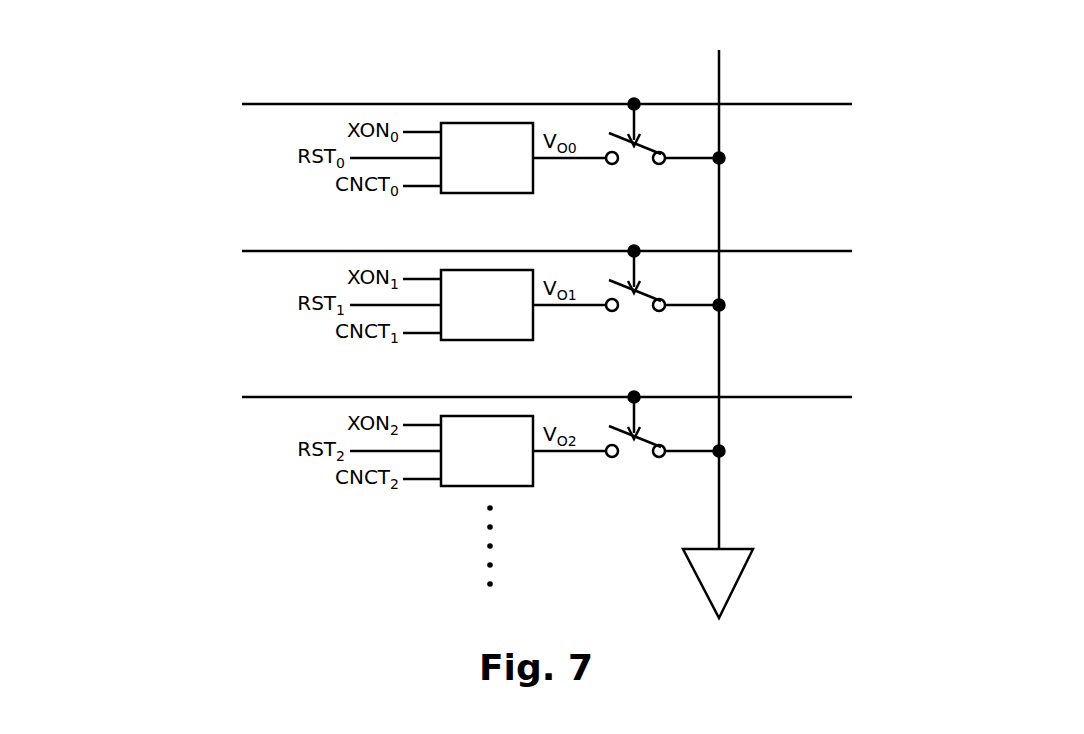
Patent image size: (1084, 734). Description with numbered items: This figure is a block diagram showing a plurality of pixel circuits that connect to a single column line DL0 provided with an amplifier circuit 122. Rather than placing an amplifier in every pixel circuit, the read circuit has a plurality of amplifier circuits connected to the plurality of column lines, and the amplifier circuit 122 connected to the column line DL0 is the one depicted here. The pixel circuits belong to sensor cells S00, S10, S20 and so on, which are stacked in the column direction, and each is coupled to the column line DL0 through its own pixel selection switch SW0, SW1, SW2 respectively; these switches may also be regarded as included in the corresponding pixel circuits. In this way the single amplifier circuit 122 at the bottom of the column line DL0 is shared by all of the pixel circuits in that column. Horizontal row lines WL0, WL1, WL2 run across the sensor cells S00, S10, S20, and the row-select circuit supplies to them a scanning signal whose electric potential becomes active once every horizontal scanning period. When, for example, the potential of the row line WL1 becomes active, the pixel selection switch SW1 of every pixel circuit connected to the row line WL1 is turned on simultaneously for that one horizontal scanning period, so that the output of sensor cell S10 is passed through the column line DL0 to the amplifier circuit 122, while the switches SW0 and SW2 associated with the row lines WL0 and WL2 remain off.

The amplifier circuit 122 is at (737, 578).
The column line DL0 is at (720, 508).
The row line WL0 is at (523, 104).
The row line WL1 is at (523, 251).
The row line WL2 is at (523, 397).
The pixel selection switch SW0 is at (635, 146).
The pixel selection switch SW1 is at (635, 293).
The pixel selection switch SW2 is at (635, 439).
The sensor cell S00 is at (487, 158).
The sensor cell S10 is at (487, 305).
The sensor cell S20 is at (487, 451).